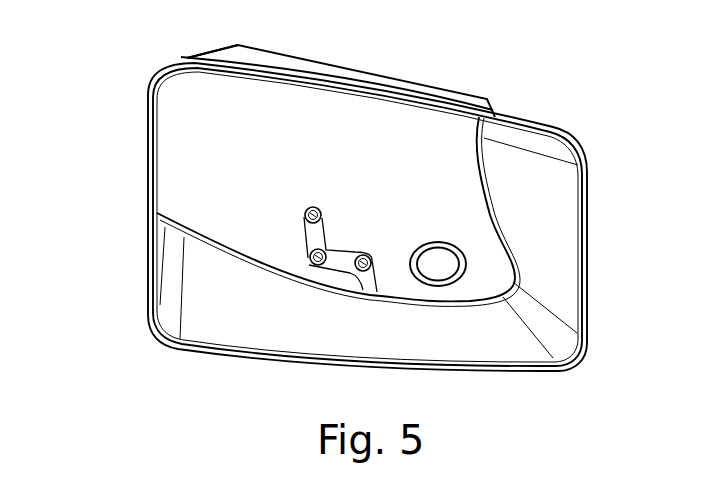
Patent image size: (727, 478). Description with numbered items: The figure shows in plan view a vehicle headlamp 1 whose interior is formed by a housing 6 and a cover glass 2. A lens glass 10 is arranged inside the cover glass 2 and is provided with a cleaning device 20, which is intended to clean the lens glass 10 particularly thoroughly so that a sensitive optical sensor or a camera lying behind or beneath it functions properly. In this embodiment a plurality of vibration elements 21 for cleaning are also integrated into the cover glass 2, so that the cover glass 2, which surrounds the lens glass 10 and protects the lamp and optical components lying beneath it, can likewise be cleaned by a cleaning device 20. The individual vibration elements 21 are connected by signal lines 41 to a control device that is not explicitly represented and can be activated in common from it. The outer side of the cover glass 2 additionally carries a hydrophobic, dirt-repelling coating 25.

The vehicle headlamp 1 is at (120, 337).
The cover glass 2 is at (337, 117).
The housing 6 is at (527, 188).
The lens glass 10 is at (440, 264).
The cleaning device 20 is at (383, 248).
The vibration elements 21 is at (326, 250).
The hydrophobic, dirt-repelling coating 25 is at (208, 118).
The signal lines 41 is at (311, 253).